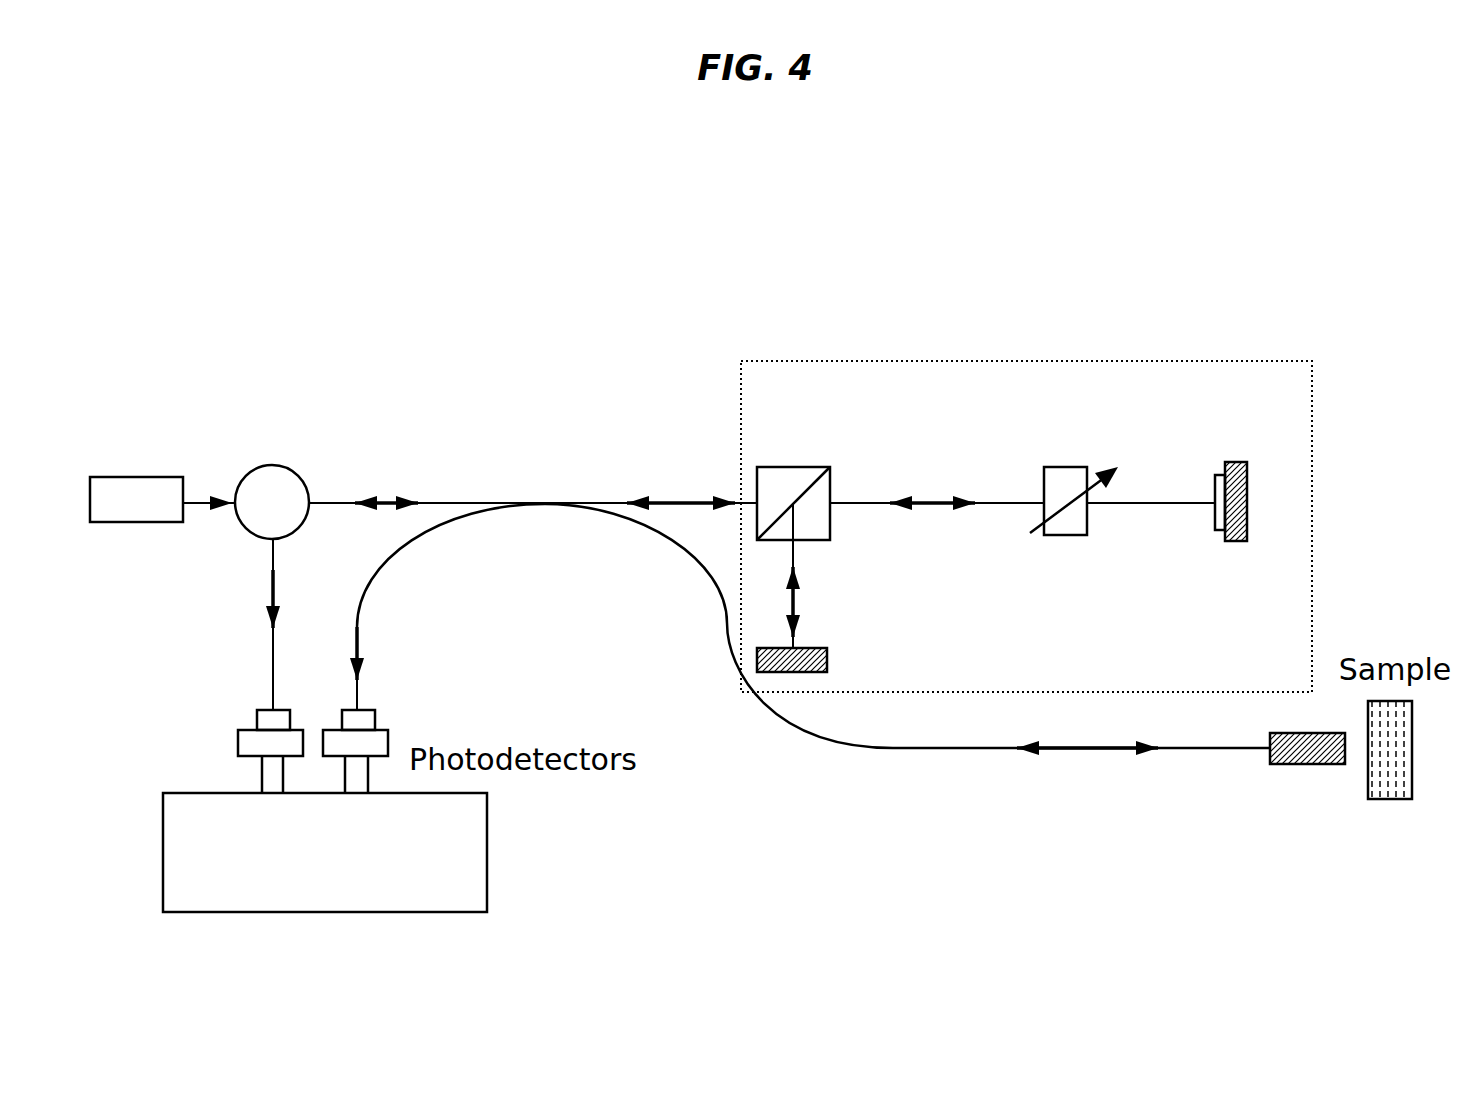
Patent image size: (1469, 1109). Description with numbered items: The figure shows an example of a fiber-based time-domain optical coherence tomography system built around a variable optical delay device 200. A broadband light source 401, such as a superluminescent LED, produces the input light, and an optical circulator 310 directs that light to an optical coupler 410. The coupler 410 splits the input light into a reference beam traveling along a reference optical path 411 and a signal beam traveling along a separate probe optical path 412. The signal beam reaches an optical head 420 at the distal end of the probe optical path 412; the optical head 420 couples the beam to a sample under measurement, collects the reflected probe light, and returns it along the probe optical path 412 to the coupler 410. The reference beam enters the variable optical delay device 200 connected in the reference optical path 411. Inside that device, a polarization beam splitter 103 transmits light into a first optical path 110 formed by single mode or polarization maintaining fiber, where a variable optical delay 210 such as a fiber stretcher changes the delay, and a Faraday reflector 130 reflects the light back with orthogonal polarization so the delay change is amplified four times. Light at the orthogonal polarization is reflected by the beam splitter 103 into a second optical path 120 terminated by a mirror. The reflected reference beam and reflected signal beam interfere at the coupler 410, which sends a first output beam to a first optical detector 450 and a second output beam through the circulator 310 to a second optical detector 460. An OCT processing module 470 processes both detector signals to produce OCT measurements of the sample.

The broadband light source 401 is at (136, 482).
The optical circulator 310 is at (279, 500).
The optical coupler 410 is at (542, 527).
The reference optical path 411 is at (688, 500).
The probe optical path 412 is at (797, 725).
The variable optical delay device 200 is at (1067, 360).
The optical polarization beam splitter 103 is at (793, 462).
The first optical path 110 is at (867, 494).
The second optical path 120 is at (807, 578).
The Faraday reflector 130 is at (1196, 458).
The variable optical delay 210 is at (1065, 538).
The optical head 420 is at (1257, 788).
The first optical detector 450 is at (385, 737).
The second optical detector 460 is at (242, 737).
The OCT processing module 470 is at (325, 852).